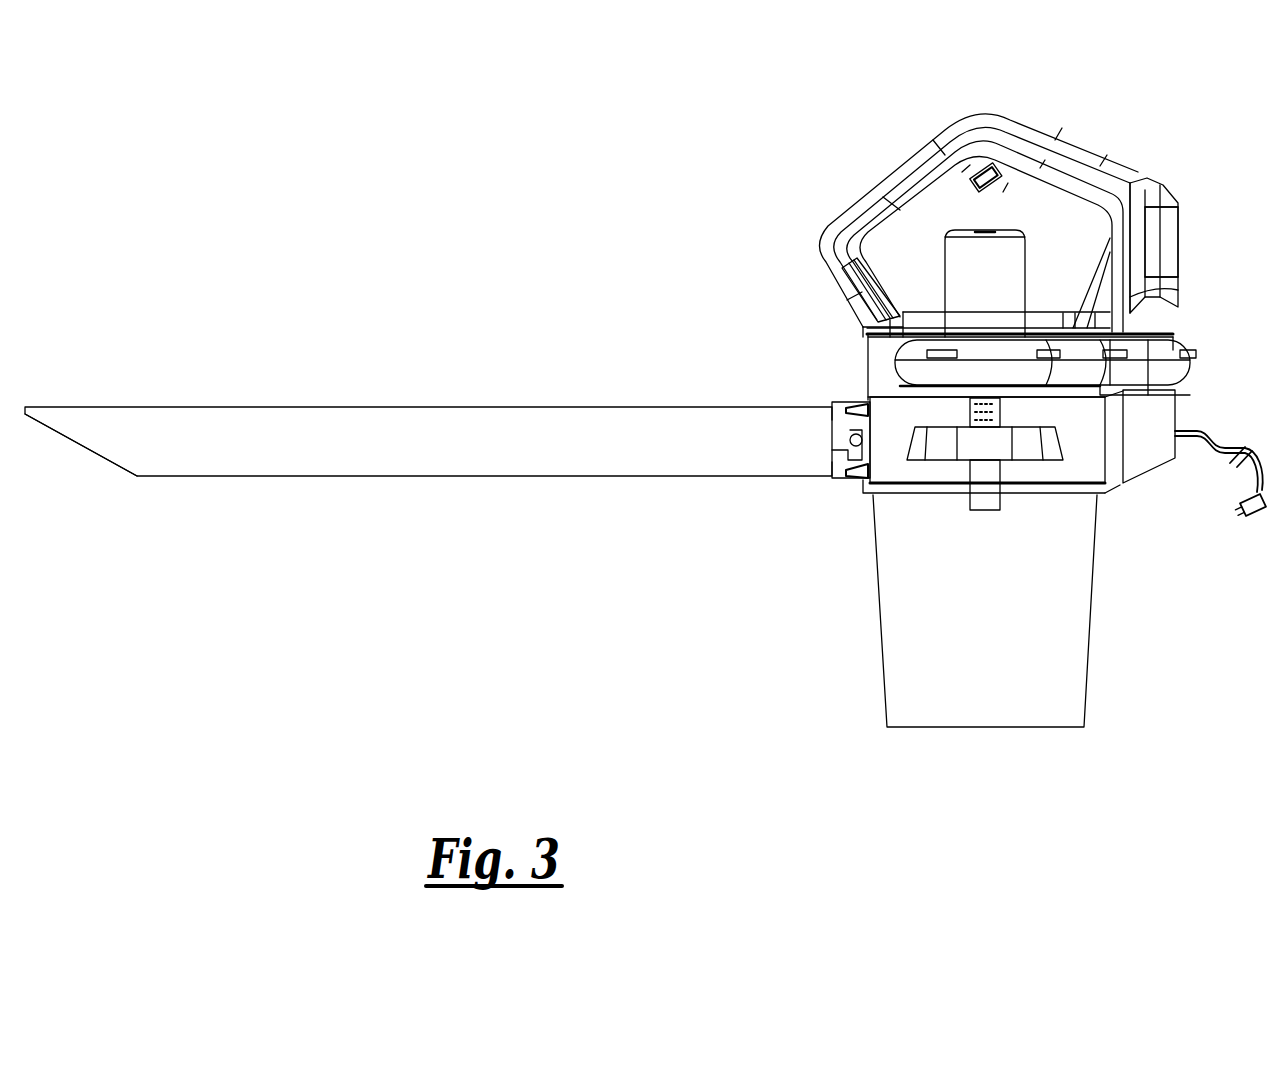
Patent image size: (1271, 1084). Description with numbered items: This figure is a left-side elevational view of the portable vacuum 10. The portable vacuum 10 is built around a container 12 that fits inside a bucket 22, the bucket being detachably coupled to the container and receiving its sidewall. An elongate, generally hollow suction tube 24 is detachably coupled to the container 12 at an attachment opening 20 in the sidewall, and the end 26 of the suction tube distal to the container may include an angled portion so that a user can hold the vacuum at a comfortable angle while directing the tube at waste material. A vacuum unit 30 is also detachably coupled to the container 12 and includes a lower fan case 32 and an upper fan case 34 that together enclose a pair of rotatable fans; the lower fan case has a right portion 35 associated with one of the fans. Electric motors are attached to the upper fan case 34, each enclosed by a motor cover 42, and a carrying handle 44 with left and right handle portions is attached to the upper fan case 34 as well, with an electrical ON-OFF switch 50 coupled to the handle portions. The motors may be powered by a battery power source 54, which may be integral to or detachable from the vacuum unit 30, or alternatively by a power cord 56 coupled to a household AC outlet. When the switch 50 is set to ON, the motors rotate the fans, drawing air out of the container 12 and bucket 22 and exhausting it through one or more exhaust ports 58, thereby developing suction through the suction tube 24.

The portable vacuum 10 is at (712, 176).
The container 12 is at (870, 490).
The attachment opening 20 is at (838, 482).
The bucket 22 is at (880, 625).
The suction tube 24 is at (501, 406).
The end of suction tube 26 is at (78, 448).
The vacuum unit 30 is at (1200, 357).
The lower fan case 32 is at (866, 367).
The upper fan case 34 is at (866, 342).
The right portion of lower fan case 35 is at (915, 375).
The motor cover 42 is at (1027, 280).
The carrying handle 44 is at (898, 163).
The ON-OFF switch 50 is at (982, 190).
The battery power source 54 is at (1180, 240).
The power cord 56 is at (1212, 450).
The exhaust port 58 is at (1160, 382).